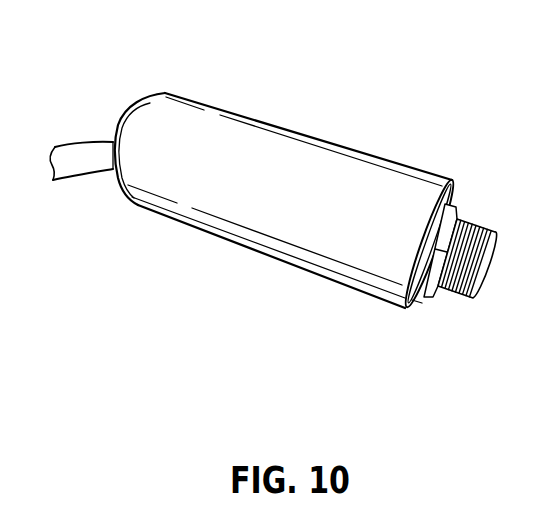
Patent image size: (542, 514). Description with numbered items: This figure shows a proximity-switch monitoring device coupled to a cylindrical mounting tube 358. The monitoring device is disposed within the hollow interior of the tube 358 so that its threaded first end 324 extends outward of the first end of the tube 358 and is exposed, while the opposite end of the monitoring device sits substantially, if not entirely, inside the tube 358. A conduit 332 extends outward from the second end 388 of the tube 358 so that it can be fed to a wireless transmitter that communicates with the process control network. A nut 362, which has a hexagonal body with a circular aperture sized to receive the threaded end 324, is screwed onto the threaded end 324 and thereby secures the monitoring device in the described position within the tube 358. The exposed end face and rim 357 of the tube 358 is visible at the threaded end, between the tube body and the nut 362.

The threaded first end 324 is at (475, 227).
The conduit 332 is at (88, 140).
The end face rim 357 is at (452, 182).
The tube 358 is at (322, 140).
The nut 362 is at (421, 298).
The second end 388 is at (129, 117).